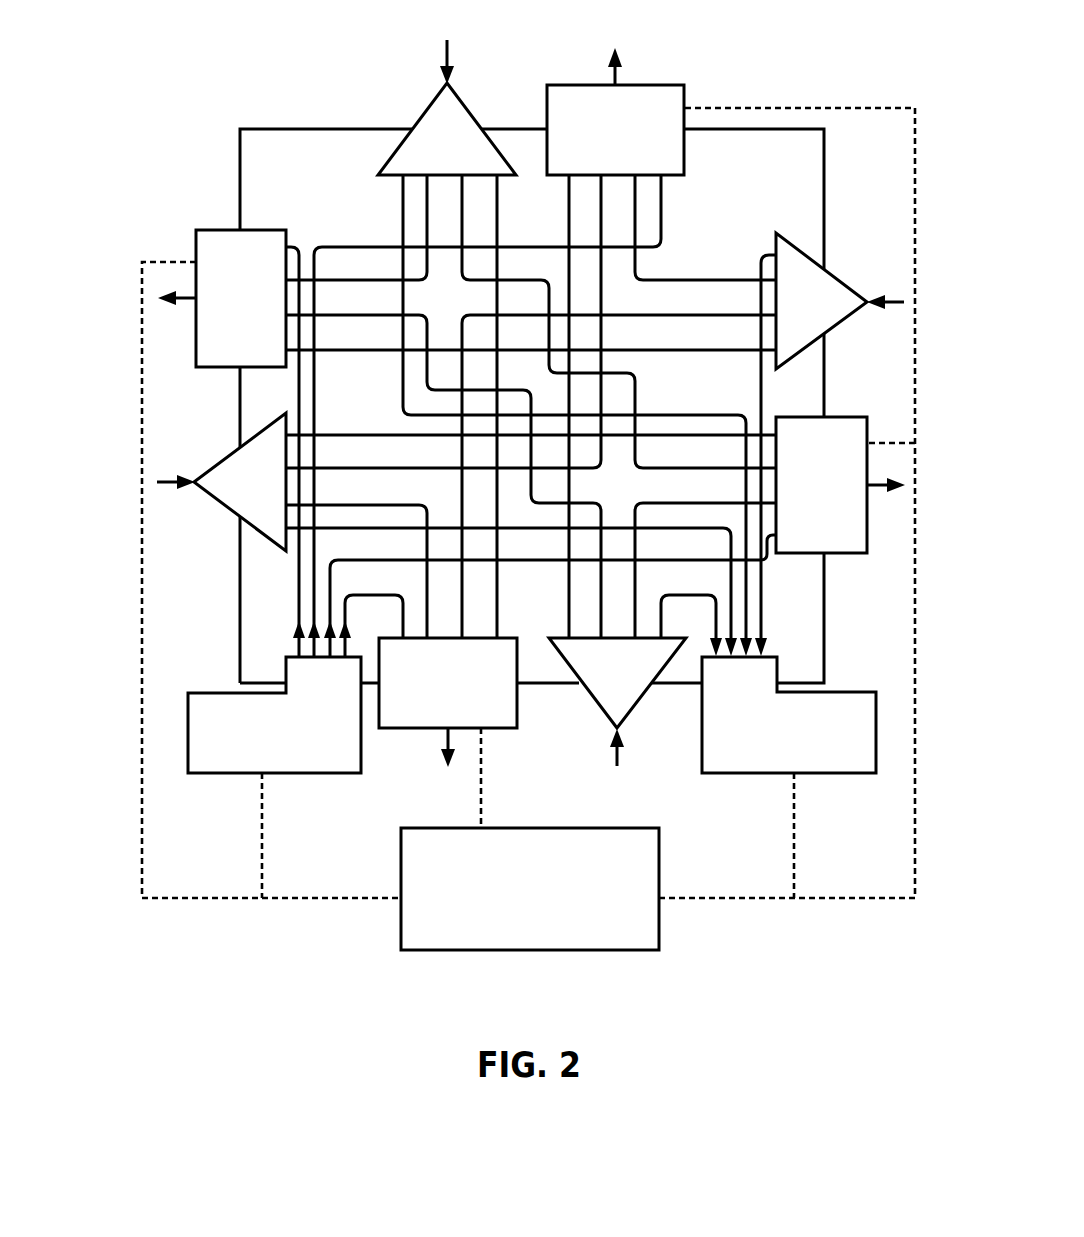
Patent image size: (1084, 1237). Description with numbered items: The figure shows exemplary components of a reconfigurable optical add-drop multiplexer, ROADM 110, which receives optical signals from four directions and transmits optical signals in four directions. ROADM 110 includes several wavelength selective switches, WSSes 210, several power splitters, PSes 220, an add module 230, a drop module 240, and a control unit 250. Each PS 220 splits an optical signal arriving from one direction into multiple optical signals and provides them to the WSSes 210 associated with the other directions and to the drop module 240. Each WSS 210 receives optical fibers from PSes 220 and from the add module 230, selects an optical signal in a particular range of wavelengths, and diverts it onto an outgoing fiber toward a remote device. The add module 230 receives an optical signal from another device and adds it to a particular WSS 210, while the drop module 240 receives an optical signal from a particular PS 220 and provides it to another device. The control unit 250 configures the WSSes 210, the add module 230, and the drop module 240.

The reconfigurable optical add-drop multiplexer (ROADM) 110 is at (213, 58).
The wavelength selective switch (WSS) 210 is at (531, 406).
The power splitter (PS) 220 is at (530, 405).
The add module 230 is at (274, 715).
The drop module 240 is at (789, 715).
The control unit 250 is at (530, 889).